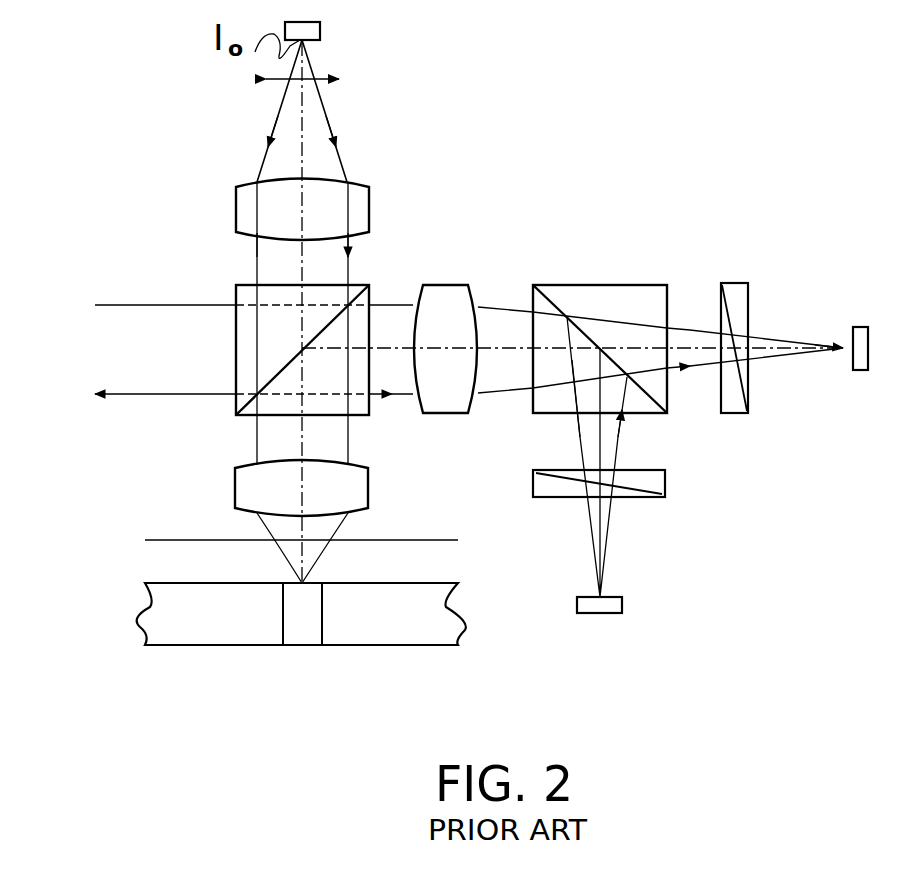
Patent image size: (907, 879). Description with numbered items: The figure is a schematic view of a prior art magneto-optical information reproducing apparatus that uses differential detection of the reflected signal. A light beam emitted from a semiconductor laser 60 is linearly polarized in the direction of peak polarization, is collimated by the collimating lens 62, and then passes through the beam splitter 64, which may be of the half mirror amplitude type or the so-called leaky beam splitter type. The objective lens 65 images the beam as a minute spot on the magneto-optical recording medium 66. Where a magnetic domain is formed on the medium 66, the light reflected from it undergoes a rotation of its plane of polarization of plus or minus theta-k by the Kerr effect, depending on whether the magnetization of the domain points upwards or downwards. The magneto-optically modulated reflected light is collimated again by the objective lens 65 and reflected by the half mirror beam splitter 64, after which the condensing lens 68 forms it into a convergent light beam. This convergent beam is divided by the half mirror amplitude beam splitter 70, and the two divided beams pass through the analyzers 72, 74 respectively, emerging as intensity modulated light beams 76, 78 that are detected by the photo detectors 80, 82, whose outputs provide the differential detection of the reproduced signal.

The semiconductor laser 60 is at (320, 33).
The collimating lens 62 is at (369, 214).
The beam splitter 64 is at (236, 350).
The objective lens 65 is at (235, 490).
The magneto-optical recording medium 66 is at (347, 583).
The condensing lens 68 is at (445, 285).
The half mirror amplitude beam splitter 70 is at (597, 285).
The analyzer 72 is at (735, 283).
The analyzer 74 is at (665, 483).
The intensity modulated light beam 76 is at (850, 362).
The intensity modulated light beam 78 is at (603, 593).
The photo detector 80 is at (860, 327).
The photo detector 82 is at (622, 605).